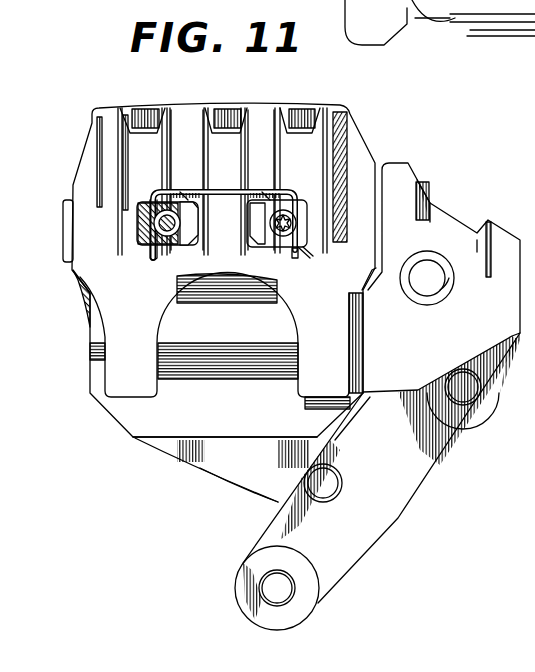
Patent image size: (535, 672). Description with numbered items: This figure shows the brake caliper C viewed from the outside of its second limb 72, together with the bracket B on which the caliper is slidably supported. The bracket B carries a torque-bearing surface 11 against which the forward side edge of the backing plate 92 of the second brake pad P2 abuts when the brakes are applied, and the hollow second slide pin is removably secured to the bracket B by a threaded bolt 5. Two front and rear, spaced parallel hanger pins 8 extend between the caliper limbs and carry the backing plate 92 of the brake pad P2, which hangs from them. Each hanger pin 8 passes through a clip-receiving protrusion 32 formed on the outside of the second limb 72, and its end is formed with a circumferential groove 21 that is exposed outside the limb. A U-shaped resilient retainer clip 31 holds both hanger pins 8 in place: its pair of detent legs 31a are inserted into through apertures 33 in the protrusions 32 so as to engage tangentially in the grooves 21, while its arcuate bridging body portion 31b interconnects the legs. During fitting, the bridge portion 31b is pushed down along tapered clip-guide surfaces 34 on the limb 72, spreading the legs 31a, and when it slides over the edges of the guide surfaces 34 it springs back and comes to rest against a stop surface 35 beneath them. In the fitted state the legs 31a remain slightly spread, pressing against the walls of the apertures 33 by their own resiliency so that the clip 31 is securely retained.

The brake caliper C is at (381, 122).
The bracket B is at (410, 495).
The torque-bearing surface 11 is at (359, 345).
The threaded bolt 5 is at (327, 487).
The tapered clip-guide surfaces 34 is at (262, 122).
The retainer clip 31 is at (144, 184).
The detent legs 31a is at (307, 201).
The bridging body portion 31b is at (218, 189).
The stop surface 35 is at (278, 186).
The through apertures 33 is at (307, 247).
The clip-receiving protrusions 32 is at (188, 230).
The hanger pins 8 is at (295, 249).
The circumferential groove 21 is at (330, 217).
The second limb 72 is at (87, 265).
The second brake pad P2 is at (130, 425).
The backing plate 92 is at (227, 430).